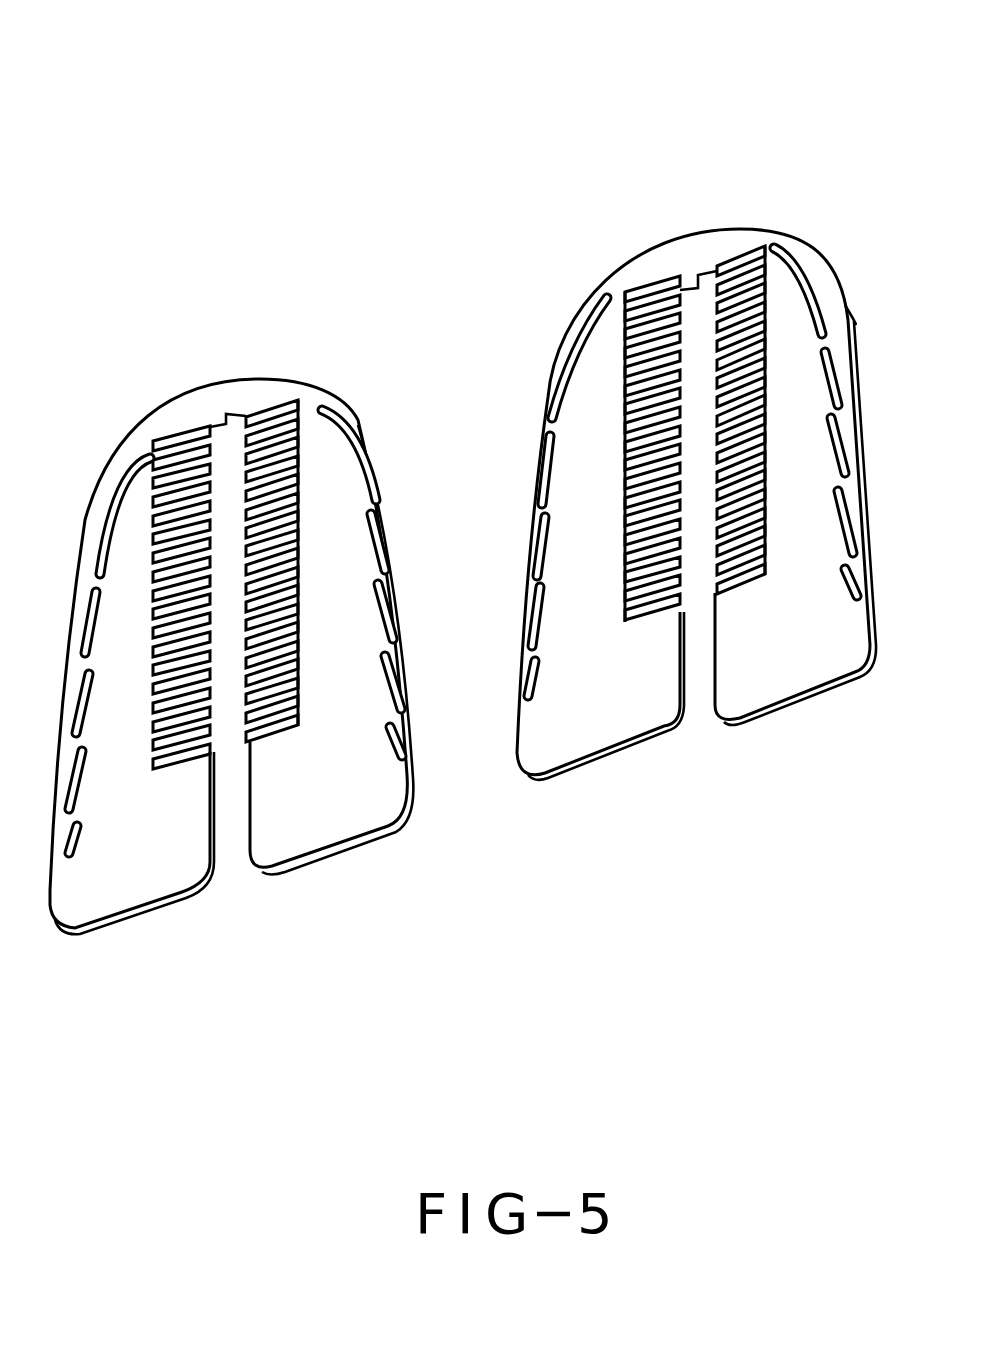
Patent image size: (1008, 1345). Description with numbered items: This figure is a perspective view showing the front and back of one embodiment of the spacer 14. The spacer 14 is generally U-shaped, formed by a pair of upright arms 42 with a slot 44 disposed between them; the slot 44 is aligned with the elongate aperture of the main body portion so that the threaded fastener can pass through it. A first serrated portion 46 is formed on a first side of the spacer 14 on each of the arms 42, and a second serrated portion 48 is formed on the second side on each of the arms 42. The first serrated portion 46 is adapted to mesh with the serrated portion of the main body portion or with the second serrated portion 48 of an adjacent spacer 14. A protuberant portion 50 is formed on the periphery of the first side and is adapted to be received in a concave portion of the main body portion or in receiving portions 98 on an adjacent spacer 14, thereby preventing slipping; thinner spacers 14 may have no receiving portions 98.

The spacer 14 is at (300, 272).
The upright arms 42 is at (357, 820).
The slot 44 is at (228, 453).
The first serrated portion 46 is at (658, 310).
The second serrated portion 48 is at (270, 403).
The protuberant portion 50 is at (592, 304).
The receiving portions 98 is at (377, 533).